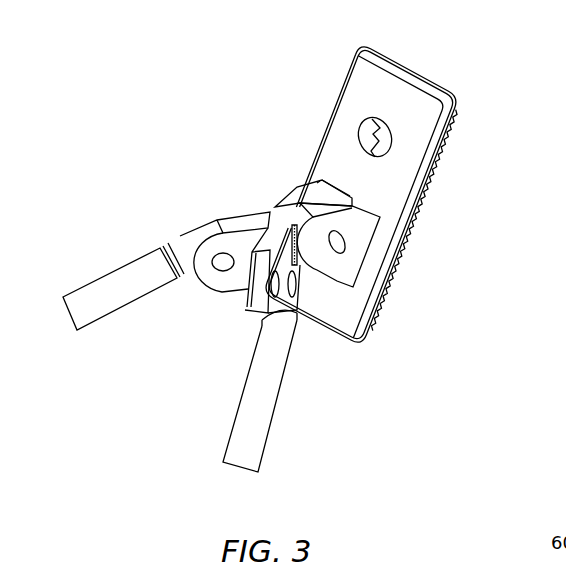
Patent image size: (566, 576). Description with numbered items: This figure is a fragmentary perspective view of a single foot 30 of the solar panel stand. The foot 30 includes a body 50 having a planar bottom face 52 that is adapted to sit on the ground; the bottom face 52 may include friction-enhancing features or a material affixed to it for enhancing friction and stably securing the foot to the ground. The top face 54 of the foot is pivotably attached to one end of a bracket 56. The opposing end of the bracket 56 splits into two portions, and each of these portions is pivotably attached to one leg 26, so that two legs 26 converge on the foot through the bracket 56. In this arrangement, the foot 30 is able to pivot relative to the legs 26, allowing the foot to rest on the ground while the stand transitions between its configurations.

The leg 26 is at (140, 267).
The foot 30 is at (307, 257).
The body 50 is at (352, 95).
The planar bottom face 52 is at (430, 229).
The top face 54 is at (300, 137).
The bracket 56 is at (235, 220).